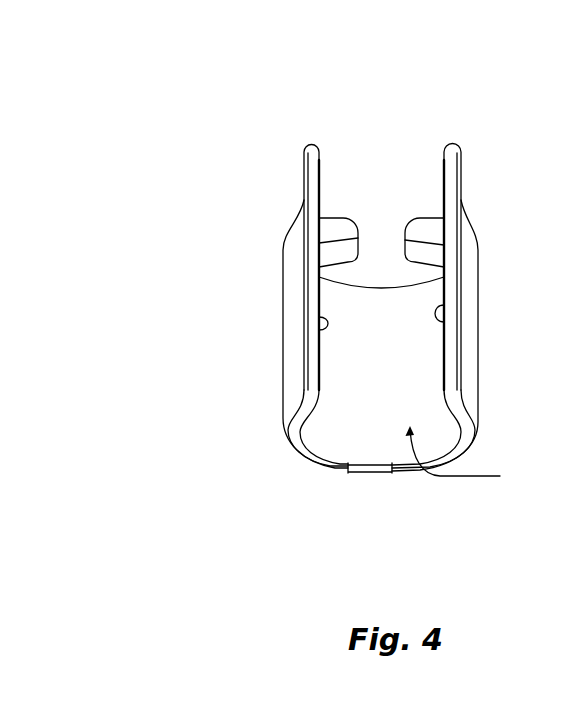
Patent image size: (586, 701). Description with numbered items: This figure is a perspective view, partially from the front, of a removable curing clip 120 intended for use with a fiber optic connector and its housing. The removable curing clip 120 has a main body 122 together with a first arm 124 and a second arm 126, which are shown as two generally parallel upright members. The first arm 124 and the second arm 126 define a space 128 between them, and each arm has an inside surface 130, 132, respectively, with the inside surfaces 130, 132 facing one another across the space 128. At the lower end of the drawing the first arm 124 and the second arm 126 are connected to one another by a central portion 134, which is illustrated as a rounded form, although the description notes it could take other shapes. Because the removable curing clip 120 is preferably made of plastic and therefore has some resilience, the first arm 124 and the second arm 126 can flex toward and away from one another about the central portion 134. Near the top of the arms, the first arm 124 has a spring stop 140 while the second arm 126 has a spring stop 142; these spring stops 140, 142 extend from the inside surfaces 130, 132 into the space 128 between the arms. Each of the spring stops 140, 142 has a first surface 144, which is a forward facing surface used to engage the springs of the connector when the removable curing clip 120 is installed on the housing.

The removable curing clip 120 is at (521, 102).
The main body 122 is at (392, 475).
The first arm 124 is at (462, 170).
The second arm 126 is at (303, 160).
The space 128 is at (466, 457).
The inside surface 130 is at (445, 323).
The inside surface 132 is at (317, 320).
The central portion 134 is at (348, 470).
The spring stop 140 is at (425, 228).
The spring stop 142 is at (333, 227).
The first surface 144 is at (333, 251).